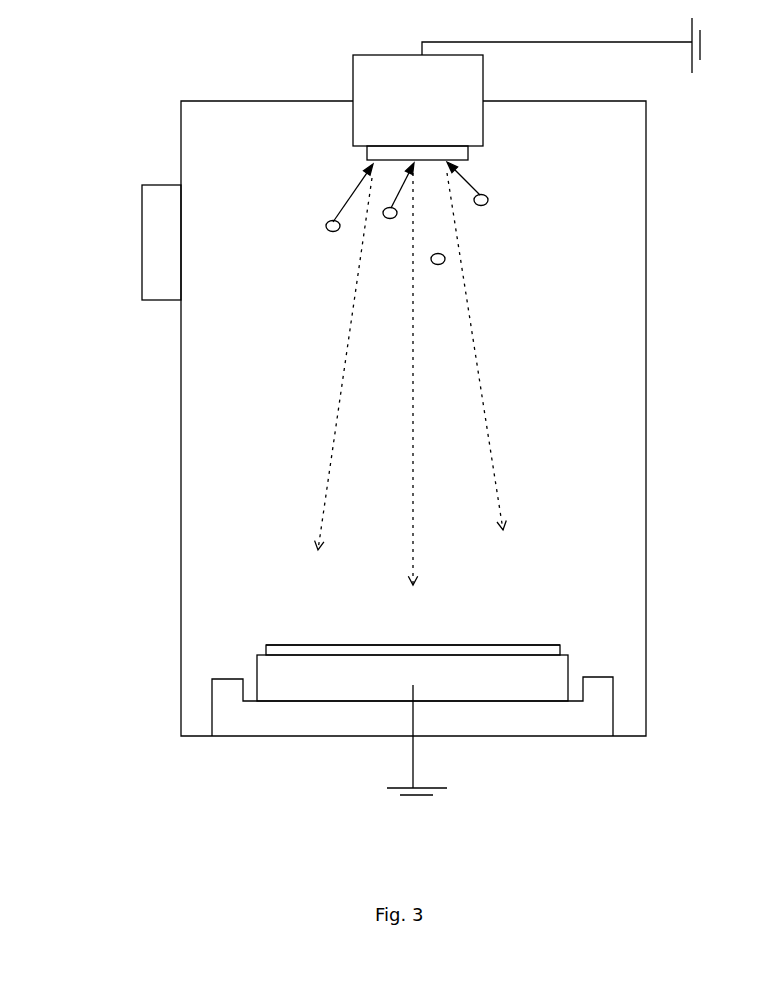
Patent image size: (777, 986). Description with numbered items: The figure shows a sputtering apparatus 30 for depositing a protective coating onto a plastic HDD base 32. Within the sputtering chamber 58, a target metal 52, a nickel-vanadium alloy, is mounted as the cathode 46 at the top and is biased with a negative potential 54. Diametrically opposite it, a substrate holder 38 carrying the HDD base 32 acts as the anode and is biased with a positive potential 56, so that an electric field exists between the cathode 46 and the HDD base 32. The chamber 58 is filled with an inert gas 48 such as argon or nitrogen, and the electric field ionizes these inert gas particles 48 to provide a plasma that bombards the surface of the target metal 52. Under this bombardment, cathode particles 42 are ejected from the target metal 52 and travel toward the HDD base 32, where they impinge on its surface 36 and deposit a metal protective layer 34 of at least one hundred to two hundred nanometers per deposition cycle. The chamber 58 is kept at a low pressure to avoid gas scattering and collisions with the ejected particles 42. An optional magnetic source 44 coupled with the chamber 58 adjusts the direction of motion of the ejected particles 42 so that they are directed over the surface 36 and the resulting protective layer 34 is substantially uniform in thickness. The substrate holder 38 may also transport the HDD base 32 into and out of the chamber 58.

The sputtering apparatus 30 is at (118, 799).
The plastic HDD base 32 is at (280, 687).
The protective layer 34 is at (288, 652).
The surface 36 is at (530, 652).
The substrate holder 38 is at (545, 718).
The ejected cathode particles 42 is at (475, 357).
The magnetic source 44 is at (150, 273).
The cathode 46 is at (375, 68).
The inert gas particles 48 is at (398, 212).
The target metal 52 is at (453, 153).
The negative potential 54 is at (582, 45).
The positive potential 56 is at (417, 757).
The sputtering chamber 58 is at (646, 290).